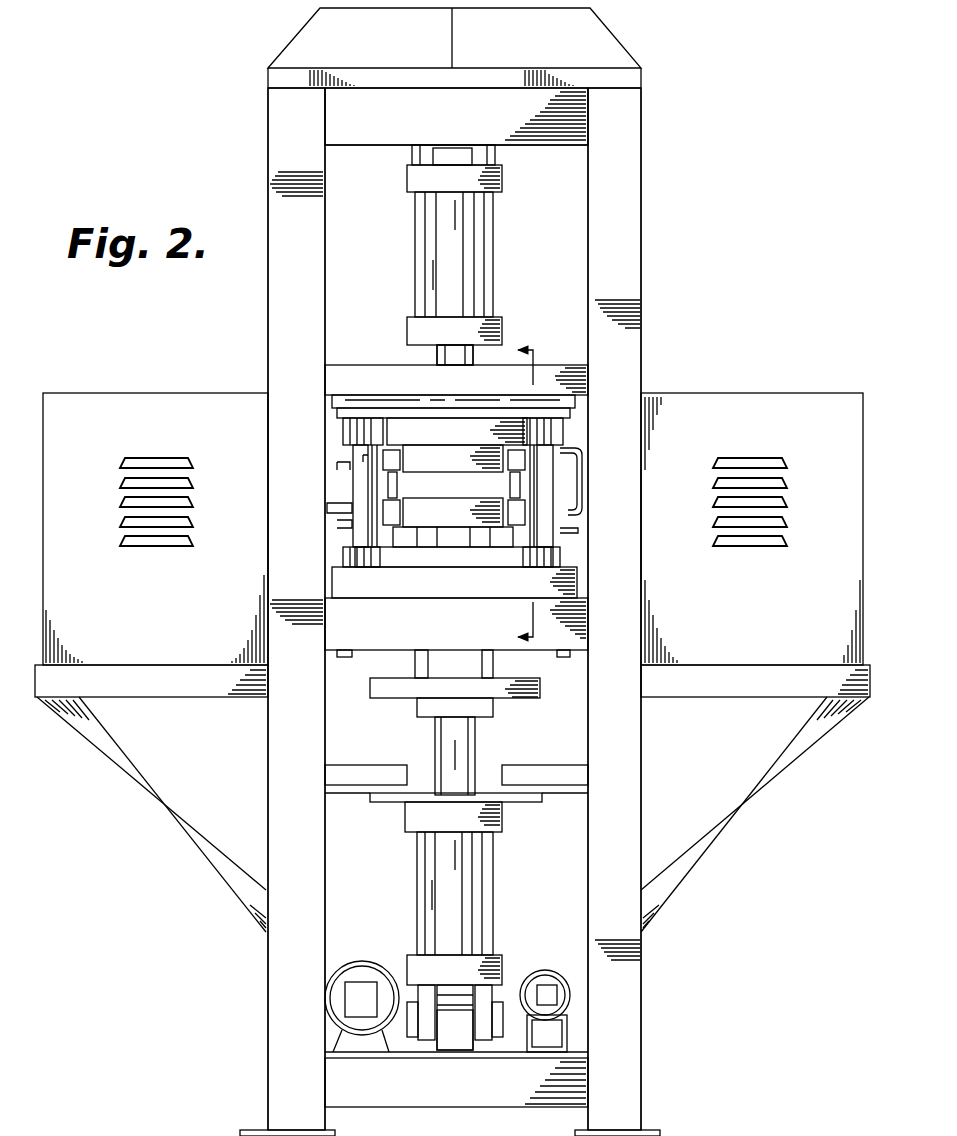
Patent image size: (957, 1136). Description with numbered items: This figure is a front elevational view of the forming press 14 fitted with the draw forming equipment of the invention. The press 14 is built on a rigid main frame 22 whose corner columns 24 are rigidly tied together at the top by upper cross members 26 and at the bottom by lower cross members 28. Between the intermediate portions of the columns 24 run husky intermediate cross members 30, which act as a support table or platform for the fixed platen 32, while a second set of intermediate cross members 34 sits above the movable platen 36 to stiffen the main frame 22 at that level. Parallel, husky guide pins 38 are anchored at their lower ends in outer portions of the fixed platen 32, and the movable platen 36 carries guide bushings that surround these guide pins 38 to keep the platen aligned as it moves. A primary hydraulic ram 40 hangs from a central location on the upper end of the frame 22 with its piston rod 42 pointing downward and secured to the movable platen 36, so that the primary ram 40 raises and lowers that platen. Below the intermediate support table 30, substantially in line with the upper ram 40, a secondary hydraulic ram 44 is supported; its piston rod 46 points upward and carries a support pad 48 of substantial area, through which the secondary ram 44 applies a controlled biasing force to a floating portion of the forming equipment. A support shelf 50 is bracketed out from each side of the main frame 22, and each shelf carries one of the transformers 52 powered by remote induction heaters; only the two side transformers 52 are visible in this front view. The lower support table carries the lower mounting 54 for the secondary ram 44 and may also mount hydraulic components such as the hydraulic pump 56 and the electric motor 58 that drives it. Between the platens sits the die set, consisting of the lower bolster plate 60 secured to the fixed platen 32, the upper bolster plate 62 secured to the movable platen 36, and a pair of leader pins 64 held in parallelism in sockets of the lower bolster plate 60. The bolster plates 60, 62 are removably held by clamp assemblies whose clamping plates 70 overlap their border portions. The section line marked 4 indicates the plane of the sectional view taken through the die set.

The forming press 14 is at (648, 330).
The main frame 22 is at (645, 233).
The corner columns 24 is at (268, 768).
The upper cross members 26 is at (362, 130).
The lower cross members 28 is at (386, 1098).
The intermediate cross members 30 is at (433, 618).
The fixed platen 32 is at (338, 580).
The second set of intermediate cross members 34 is at (332, 365).
The movable platen 36 is at (405, 408).
The guide pins 38 is at (360, 475).
The primary hydraulic ram 40 is at (508, 250).
The piston rod 42 is at (437, 355).
The secondary hydraulic ram 44 is at (497, 887).
The piston rod 46 is at (462, 744).
The support pad 48 is at (500, 676).
The support shelf 50 is at (167, 697).
The transformers 52 is at (150, 395).
The lower mounting 54 is at (452, 1040).
The hydraulic pump 56 is at (560, 993).
The electric motor 58 is at (362, 968).
The lower bolster plate 60 is at (405, 563).
The upper bolster plate 62 is at (512, 437).
The leader pins 64 is at (395, 490).
The clamping plates 70 is at (565, 447).
The section line 4- 4 is at (512, 493).